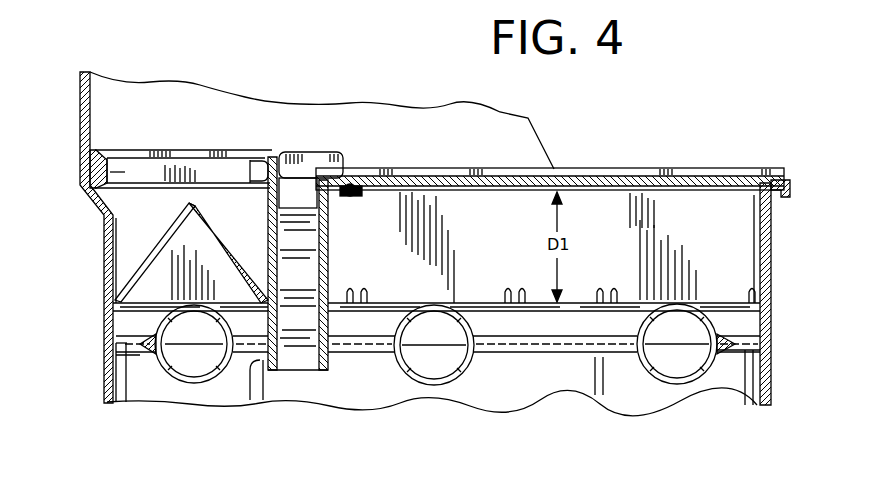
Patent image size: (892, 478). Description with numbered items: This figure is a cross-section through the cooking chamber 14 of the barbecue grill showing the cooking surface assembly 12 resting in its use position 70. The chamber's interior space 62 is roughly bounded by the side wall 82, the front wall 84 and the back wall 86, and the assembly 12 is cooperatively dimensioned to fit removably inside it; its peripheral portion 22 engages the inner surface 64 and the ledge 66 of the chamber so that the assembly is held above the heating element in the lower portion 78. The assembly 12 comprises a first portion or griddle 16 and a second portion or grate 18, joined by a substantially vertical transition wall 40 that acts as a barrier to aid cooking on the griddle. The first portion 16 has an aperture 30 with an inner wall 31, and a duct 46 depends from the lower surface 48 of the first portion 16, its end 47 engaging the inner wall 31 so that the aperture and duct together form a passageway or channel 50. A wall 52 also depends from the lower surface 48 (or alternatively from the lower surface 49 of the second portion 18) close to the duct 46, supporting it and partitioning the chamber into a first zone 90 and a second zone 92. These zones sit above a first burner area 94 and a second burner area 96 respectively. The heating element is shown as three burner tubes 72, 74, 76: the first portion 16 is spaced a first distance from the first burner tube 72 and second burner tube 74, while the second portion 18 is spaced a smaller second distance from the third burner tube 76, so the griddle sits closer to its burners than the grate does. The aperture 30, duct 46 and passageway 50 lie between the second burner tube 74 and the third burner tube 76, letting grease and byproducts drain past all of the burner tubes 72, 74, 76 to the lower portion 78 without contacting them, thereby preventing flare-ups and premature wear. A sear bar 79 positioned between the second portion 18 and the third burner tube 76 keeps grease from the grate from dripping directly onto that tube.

The cooking surface assembly 12 is at (673, 151).
The cooking chamber 14 is at (517, 140).
The first portion or griddle 16 is at (712, 163).
The second portion or grate 18 is at (216, 148).
The peripheral portion 22 is at (785, 164).
The aperture 30 is at (300, 175).
The inner wall of aperture 31 is at (258, 160).
The transition wall 40 is at (295, 182).
The duct 46 is at (250, 372).
The end of duct 47 is at (266, 195).
The lower surface of first portion 48 is at (716, 190).
The lower surface of second portion 49 is at (112, 172).
The passageway or channel 50 is at (300, 355).
The wall 52 is at (328, 263).
The interior space 62 is at (110, 120).
The inner surface 64 is at (74, 185).
The ledge 66 is at (83, 196).
The use position 70 is at (661, 111).
The first burner tube 72 is at (675, 368).
The second burner tube 74 is at (450, 365).
The third burner tube 76 is at (196, 365).
The lower portion of cooking chamber 78 is at (138, 385).
The sear bar 79 is at (155, 260).
The side wall 82 is at (730, 392).
The front wall 84 is at (762, 347).
The back wall 86 is at (102, 307).
The first zone 90 is at (494, 248).
The second zone 92 is at (204, 247).
The first burner area 94 is at (512, 320).
The second burner area 96 is at (235, 312).